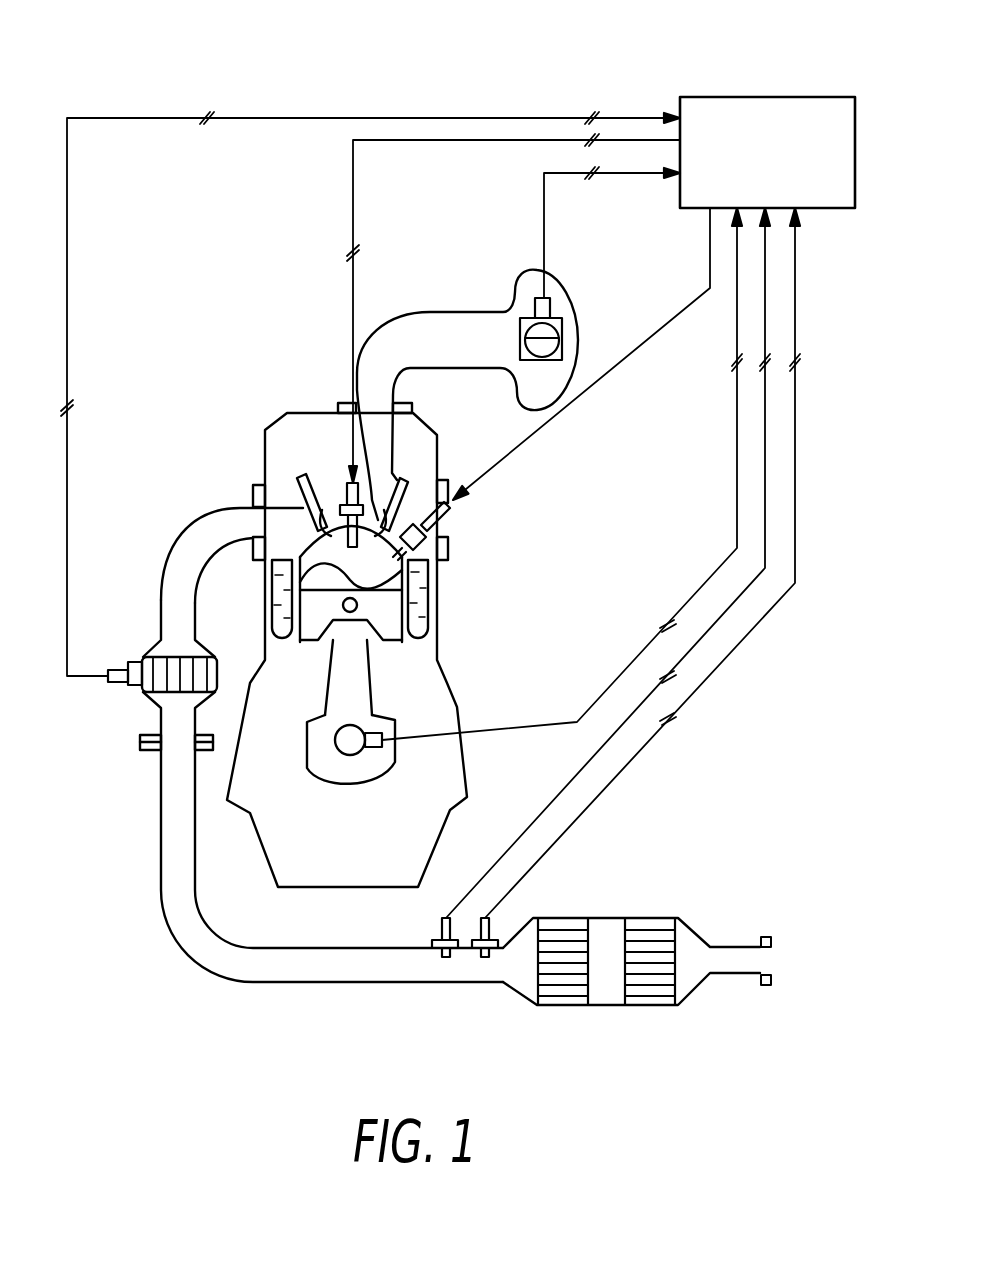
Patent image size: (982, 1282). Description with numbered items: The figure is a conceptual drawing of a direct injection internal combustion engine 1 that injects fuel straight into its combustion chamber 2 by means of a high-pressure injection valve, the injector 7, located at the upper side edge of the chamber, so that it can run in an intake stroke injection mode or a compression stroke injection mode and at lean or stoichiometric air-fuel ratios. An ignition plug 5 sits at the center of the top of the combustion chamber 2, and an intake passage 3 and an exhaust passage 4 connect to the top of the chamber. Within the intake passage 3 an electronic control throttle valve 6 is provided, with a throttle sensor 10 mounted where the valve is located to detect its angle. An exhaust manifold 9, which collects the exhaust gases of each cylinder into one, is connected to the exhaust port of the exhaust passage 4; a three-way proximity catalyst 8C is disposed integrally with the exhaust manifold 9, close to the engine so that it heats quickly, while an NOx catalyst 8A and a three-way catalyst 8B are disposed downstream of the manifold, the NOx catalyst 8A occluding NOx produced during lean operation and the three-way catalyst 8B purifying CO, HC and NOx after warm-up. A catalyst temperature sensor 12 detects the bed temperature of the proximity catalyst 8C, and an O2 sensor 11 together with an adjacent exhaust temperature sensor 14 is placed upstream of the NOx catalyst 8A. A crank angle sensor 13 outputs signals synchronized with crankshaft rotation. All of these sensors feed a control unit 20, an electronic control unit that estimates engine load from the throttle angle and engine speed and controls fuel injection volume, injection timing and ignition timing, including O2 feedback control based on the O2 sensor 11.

The direct injection internal combustion engine 1 is at (260, 401).
The combustion chamber 2 is at (307, 557).
The intake passage 3 is at (457, 318).
The exhaust passage 4 is at (160, 883).
The ignition plug 5 is at (345, 485).
The electronic control throttle valve 6 is at (563, 326).
The high-pressure injection valve 7 is at (427, 543).
The NOx catalyst 8A is at (567, 998).
The three-way catalyst 8B is at (652, 998).
The three-way catalyst (proximity catalyst) 8C is at (157, 692).
The exhaust manifold 9 is at (163, 593).
The throttle sensor 10 is at (553, 302).
The O2 sensor 11 is at (440, 927).
The catalyst temperature sensor 12 is at (113, 687).
The crank angle sensor 13 is at (371, 731).
The exhaust temperature sensor 14 is at (492, 928).
The control unit (ECU) 20 is at (763, 97).